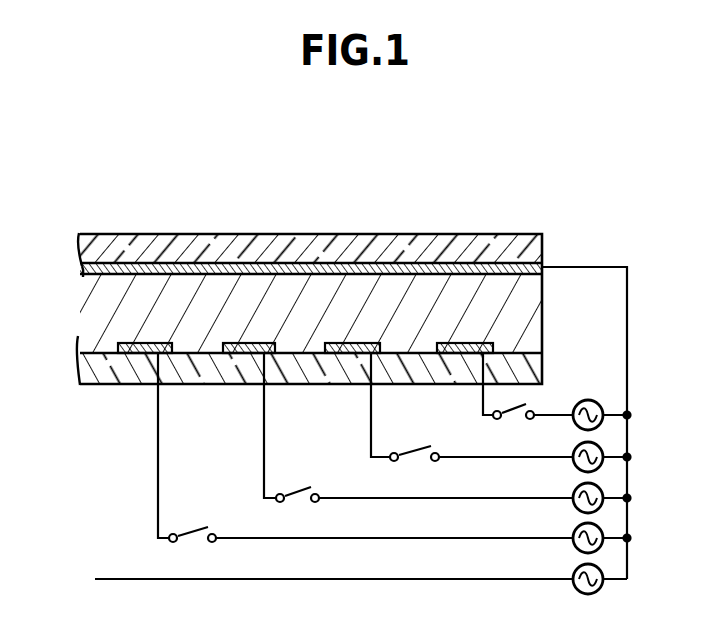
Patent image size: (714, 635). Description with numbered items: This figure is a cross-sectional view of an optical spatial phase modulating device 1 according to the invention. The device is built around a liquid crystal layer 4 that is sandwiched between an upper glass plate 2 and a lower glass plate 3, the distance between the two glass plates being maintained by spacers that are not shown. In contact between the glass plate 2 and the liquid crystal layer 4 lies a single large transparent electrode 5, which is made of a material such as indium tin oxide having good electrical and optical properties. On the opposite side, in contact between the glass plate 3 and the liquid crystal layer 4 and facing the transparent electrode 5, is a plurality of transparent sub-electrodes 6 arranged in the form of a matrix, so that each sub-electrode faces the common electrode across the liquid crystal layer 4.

The optical spatial phase modulating device 1 is at (428, 217).
The glass plate 2 is at (172, 235).
The glass plate 3 is at (117, 384).
The liquid crystal layer 4 is at (258, 278).
The transparent electrode 5 is at (317, 265).
The transparent sub-electrodes 6 is at (150, 353).